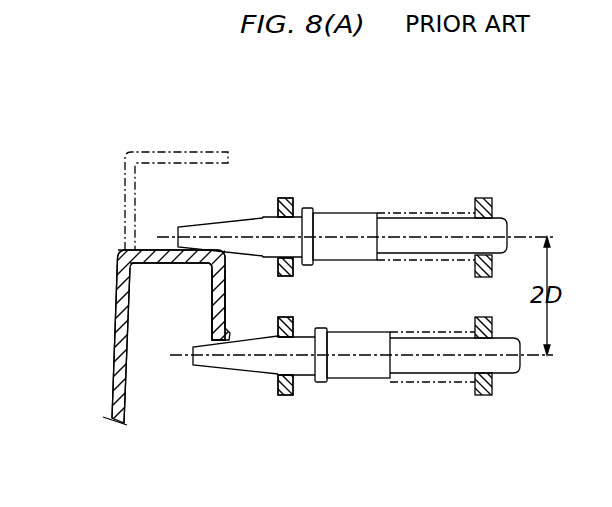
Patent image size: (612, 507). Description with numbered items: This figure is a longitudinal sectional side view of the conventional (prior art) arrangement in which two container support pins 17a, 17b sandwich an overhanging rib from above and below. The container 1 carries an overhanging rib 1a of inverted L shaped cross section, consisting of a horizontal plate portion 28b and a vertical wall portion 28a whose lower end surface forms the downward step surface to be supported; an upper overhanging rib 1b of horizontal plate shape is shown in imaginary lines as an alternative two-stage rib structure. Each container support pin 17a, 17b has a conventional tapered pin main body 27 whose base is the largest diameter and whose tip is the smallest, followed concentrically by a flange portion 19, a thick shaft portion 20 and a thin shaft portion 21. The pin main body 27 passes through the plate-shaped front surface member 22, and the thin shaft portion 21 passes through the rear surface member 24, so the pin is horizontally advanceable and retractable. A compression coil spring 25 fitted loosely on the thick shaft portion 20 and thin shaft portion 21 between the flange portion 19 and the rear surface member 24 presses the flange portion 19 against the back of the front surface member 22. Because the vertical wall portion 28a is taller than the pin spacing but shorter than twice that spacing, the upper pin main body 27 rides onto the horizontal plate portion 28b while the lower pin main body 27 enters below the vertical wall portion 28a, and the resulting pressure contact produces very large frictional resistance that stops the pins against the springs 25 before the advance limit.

The container 1 is at (131, 382).
The overhanging rib 1a is at (234, 292).
The upper overhanging rib 1b is at (173, 157).
The container support pin 17a is at (268, 208).
The container support pin 17b is at (285, 296).
The flange portion 19 is at (330, 214).
The thick shaft portion 20 is at (365, 220).
The thin shaft portion 21 is at (443, 227).
The front surface member 22 is at (293, 272).
The rear surface member 24 is at (492, 210).
The compression coil spring 25 is at (428, 212).
The pin main body 27 is at (217, 226).
The vertical wall portion 28a is at (212, 302).
The horizontal plate portion 28b is at (170, 264).